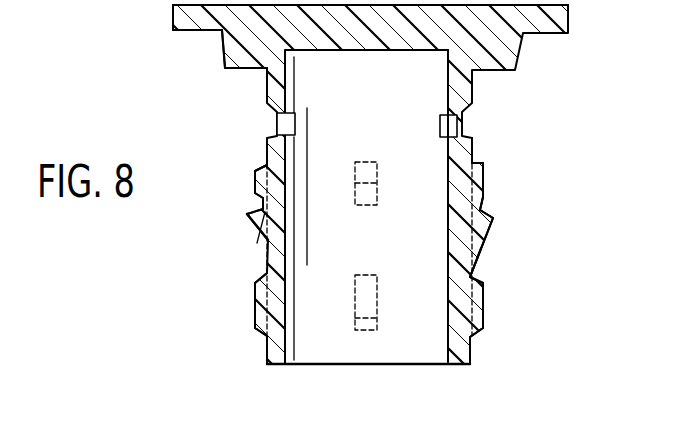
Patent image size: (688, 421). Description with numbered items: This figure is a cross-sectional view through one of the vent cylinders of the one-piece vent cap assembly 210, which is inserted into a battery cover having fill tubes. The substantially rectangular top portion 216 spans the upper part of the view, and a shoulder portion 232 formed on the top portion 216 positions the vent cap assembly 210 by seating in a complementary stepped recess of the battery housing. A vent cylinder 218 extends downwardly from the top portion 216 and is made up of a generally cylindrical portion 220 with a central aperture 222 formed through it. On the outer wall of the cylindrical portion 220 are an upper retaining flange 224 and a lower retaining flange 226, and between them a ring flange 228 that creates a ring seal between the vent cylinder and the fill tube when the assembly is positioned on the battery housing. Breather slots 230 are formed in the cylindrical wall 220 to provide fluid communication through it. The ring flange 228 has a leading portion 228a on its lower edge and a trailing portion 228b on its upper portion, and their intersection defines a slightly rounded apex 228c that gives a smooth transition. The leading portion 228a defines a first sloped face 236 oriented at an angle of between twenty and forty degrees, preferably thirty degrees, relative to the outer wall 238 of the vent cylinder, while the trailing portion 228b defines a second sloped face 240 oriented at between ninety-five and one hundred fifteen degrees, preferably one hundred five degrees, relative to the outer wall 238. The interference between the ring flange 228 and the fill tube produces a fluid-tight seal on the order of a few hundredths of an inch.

The vent cap assembly 210 is at (545, 91).
The top portion 216 is at (172, 17).
The vent cylinder 218 is at (536, 220).
The cylindrical portion 220 is at (474, 143).
The central aperture 222 is at (447, 356).
The upper retaining flange 224 is at (255, 173).
The lower retaining flange 226 is at (255, 300).
The ring flange 228 is at (477, 243).
The leading portion 228a is at (483, 258).
The trailing portion 228b is at (488, 204).
The apex 228c is at (492, 221).
The breather slot 230 is at (275, 126).
The shoulder portion 232 is at (222, 57).
The first sloped face 236 is at (255, 230).
The outer wall 238 is at (265, 346).
The second sloped face 240 is at (250, 212).